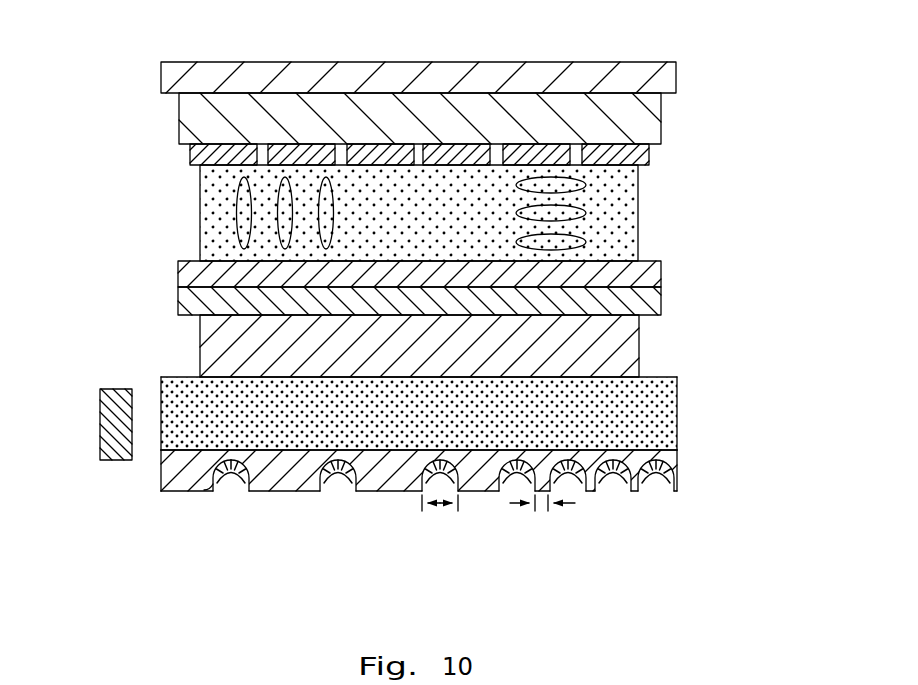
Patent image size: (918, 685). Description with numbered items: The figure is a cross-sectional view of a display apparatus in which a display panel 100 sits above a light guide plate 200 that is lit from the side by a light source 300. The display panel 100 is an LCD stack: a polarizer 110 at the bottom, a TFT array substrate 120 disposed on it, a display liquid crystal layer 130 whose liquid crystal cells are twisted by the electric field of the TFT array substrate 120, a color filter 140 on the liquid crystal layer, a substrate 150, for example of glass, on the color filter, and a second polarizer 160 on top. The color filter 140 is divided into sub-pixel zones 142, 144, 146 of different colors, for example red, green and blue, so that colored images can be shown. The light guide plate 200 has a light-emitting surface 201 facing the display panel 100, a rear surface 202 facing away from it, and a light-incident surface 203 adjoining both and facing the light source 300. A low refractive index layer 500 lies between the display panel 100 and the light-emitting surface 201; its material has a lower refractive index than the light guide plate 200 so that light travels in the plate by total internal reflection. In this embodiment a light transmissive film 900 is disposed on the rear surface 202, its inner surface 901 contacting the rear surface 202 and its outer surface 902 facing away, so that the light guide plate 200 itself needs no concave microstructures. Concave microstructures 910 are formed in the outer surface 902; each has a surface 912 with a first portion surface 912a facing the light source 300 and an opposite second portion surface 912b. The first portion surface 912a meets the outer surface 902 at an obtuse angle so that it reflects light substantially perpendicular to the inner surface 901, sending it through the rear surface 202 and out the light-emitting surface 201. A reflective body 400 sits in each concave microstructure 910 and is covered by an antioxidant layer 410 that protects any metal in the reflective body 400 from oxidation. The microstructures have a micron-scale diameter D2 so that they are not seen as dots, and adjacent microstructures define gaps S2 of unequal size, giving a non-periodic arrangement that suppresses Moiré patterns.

The display panel 100 is at (495, 164).
The polarizer 110 is at (468, 302).
The TFT array substrate 120 is at (653, 277).
The display liquid crystal layer 130 is at (634, 197).
The color filter 140 is at (474, 98).
The sub-pixel zone 142 is at (222, 150).
The sub-pixel zone 144 is at (302, 150).
The sub-pixel zone 146 is at (380, 152).
The substrate 150 is at (656, 113).
The polarizer 160 is at (672, 77).
The light guide plate 200 is at (390, 398).
The light-emitting surface 201 is at (177, 377).
The rear surface 202 is at (161, 458).
The light-incident surface 203 is at (161, 387).
The light source 300 is at (107, 423).
The reflective body 400 is at (398, 409).
The antioxidant layer 410 is at (610, 477).
The low refractive index layer 500 is at (632, 345).
The light transmissive film 900 is at (441, 435).
The inner surface 901 is at (480, 450).
The outer surface 902 is at (385, 493).
The concave microstructure 910 is at (419, 524).
The surface 912 is at (229, 527).
The first portion surface 912a is at (213, 481).
The second portion surface 912b is at (259, 505).
The diameter D2 is at (443, 527).
The spacing between recesses S2 is at (542, 527).